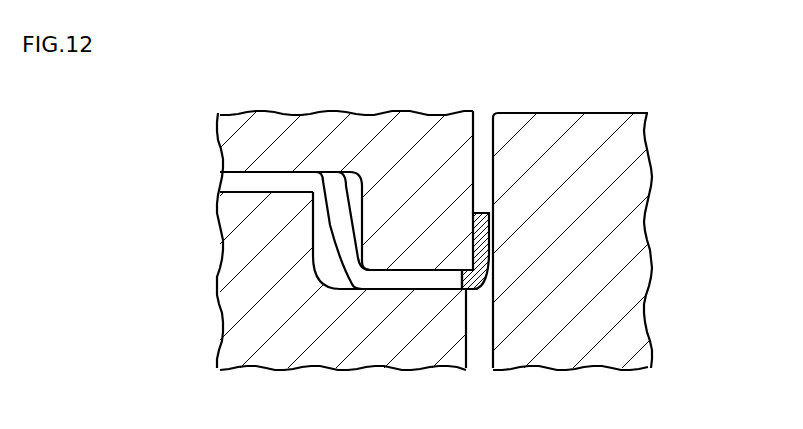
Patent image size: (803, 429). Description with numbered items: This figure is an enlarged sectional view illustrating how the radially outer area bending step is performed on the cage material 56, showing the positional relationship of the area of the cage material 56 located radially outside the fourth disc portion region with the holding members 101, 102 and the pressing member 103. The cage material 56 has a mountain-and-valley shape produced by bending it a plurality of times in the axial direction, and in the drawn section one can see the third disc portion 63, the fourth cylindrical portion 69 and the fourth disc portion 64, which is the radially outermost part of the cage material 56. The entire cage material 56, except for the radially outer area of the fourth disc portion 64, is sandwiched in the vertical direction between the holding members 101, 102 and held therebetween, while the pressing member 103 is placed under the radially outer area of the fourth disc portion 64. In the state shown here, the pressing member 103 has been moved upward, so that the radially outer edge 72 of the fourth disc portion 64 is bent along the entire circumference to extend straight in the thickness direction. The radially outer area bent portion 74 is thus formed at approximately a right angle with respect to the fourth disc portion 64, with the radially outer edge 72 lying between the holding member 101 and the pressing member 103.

The cage material 56 is at (408, 254).
The third disc portion 63 is at (258, 185).
The fourth disc portion 64 is at (410, 280).
The fourth cylindrical portion 69 is at (337, 228).
The radially outer edge 72 is at (482, 212).
The radially outer area bent portion 74 is at (497, 237).
The holding member 101 is at (300, 132).
The holding member 102 is at (342, 345).
The pressing member 103 is at (583, 345).